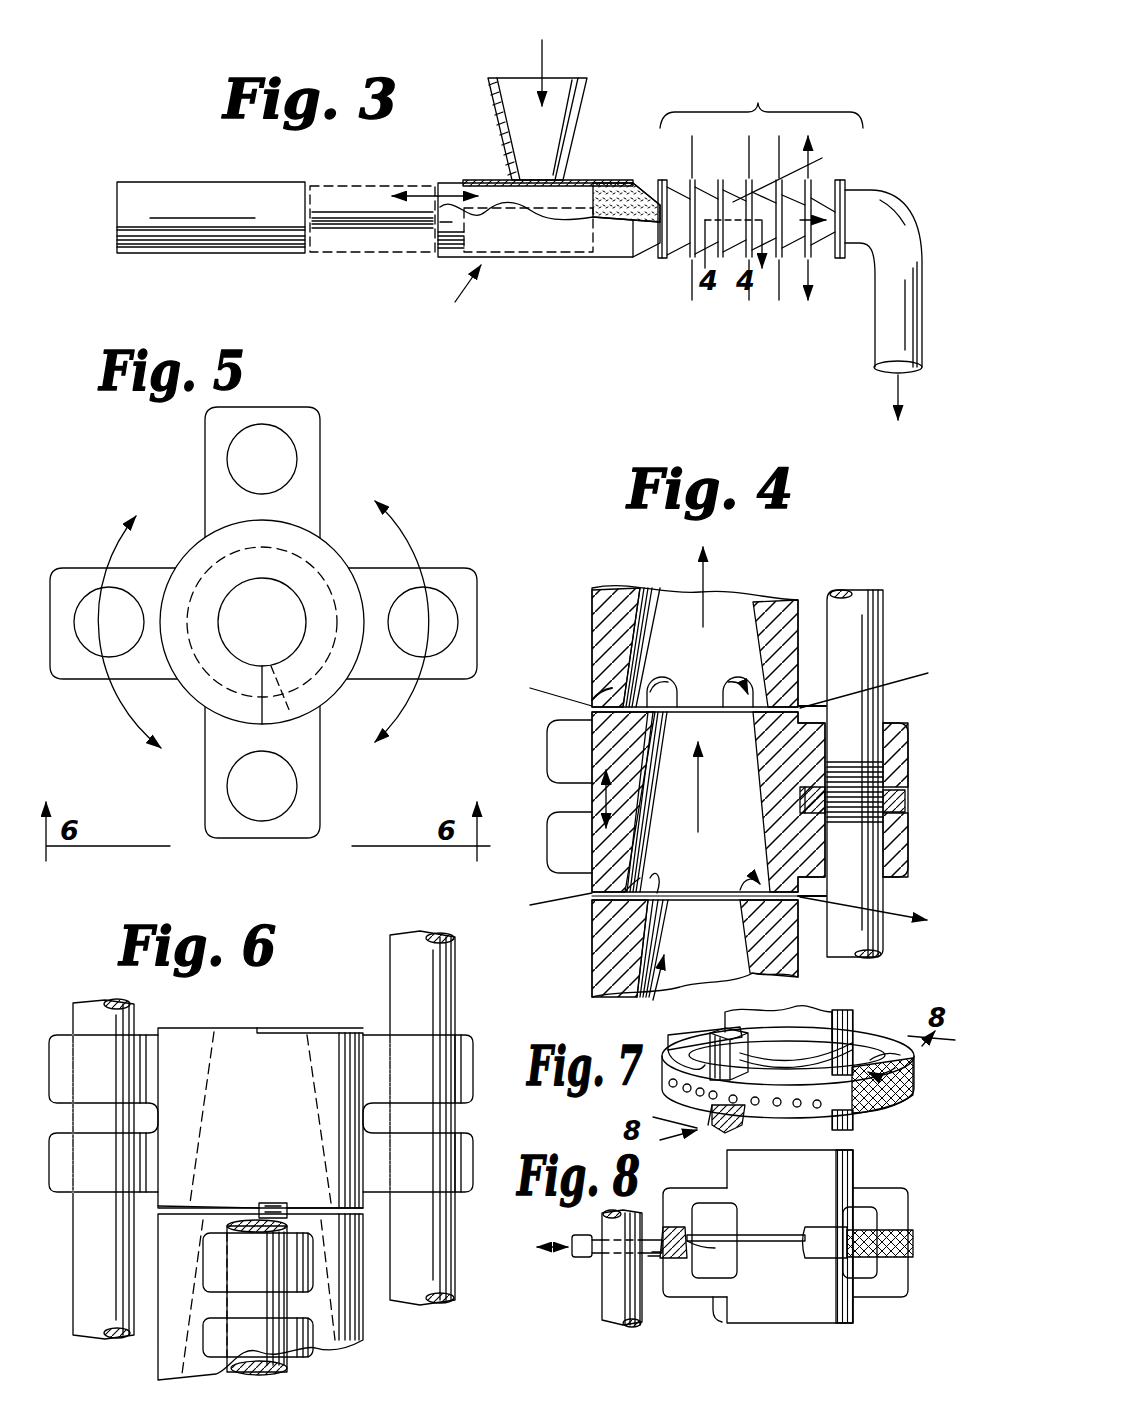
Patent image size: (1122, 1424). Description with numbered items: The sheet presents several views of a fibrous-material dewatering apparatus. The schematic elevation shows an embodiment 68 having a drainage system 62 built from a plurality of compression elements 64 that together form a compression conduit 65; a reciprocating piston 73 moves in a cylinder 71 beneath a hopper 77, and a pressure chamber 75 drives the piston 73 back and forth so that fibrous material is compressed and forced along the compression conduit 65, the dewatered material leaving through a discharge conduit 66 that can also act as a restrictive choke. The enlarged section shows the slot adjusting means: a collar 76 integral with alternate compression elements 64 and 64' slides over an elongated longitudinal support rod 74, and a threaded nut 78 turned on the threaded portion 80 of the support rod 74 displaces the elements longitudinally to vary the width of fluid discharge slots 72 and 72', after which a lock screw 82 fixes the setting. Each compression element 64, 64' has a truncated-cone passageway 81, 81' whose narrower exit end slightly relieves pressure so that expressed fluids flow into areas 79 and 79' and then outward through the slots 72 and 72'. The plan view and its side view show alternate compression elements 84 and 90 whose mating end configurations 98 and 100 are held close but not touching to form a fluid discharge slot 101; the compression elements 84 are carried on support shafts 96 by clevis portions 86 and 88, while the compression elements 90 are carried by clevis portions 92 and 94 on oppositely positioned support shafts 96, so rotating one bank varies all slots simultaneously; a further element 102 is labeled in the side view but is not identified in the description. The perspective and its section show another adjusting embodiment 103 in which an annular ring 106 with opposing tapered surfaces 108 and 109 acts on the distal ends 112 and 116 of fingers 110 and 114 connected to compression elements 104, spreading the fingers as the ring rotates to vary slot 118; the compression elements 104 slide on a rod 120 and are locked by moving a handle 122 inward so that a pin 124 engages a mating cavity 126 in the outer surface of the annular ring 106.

In FIG. 3, the drainage system 62 is at (761, 98).
In FIG. 3, the compression element 64 is at (645, 252).
In FIG. 4, the compression element 64 is at (726, 796).
In FIG. 3, the compression element 64' is at (751, 213).
In FIG. 4, the compression element 64' is at (664, 773).
In FIG. 3, the compression conduit 65 is at (836, 198).
In FIG. 4, the compression conduit 65 is at (715, 977).
In FIG. 3, the discharge conduit 66 is at (874, 200).
In FIG. 3, the embodiment 68 is at (453, 300).
In FIG. 3, the cylinder 71 is at (518, 260).
In FIG. 4, the fluid discharge slot 72 is at (815, 688).
In FIG. 4, the fluid discharge slot 72' is at (824, 944).
In FIG. 3, the reciprocating piston 73 is at (447, 257).
In FIG. 4, the support rod 74 is at (885, 893).
In FIG. 3, the pressure chamber 75 is at (248, 256).
In FIG. 4, the collar 76 is at (908, 737).
In FIG. 3, the hopper 77 is at (583, 95).
In FIG. 4, the threaded nut 78 is at (905, 795).
In FIG. 4, the area 79 is at (592, 911).
In FIG. 4, the area 79' is at (583, 677).
In FIG. 4, the threaded portion 80 is at (857, 765).
In FIG. 4, the passageway 81 is at (730, 802).
In FIG. 4, the passageway 81' is at (762, 577).
In FIG. 4, the lock screw 82 is at (895, 805).
In FIG. 5, the compression element 84 is at (306, 520).
In FIG. 6, the compression element 84 is at (199, 1028).
In FIG. 5, the clevis portion 86 is at (433, 566).
In FIG. 6, the clevis portion 86 is at (463, 1035).
In FIG. 5, the clevis portion 88 is at (82, 564).
In FIG. 6, the clevis portion 88 is at (65, 1035).
In FIG. 5, the compression element 90 is at (262, 622).
In FIG. 6, the compression element 90 is at (365, 1318).
In FIG. 5, the clevis portion 92 is at (325, 790).
In FIG. 6, the clevis portion 92 is at (313, 1340).
In FIG. 5, the clevis portion 94 is at (320, 436).
In FIG. 5, the support shaft 96 is at (452, 608).
In FIG. 6, the support shaft 96 is at (455, 965).
In FIG. 5, the mating end configuration 98 is at (320, 696).
In FIG. 6, the mating end configuration 98 is at (290, 1028).
In FIG. 6, the mating end configuration 100 is at (268, 1203).
In FIG. 6, the fluid discharge slot 101 is at (158, 1206).
In FIG. 6, the joint line 102 is at (309, 1197).
In FIG. 7, the slot adjusting means embodiment 103 is at (920, 1090).
In FIG. 8, the slot adjusting means embodiment 103 is at (913, 1200).
In FIG. 7, the compression element 104 is at (853, 1125).
In FIG. 8, the compression element 104 is at (858, 1313).
In FIG. 7, the annular ring 106 is at (672, 1035).
In FIG. 8, the annular ring 106 is at (913, 1245).
In FIG. 7, the tapered surface 108 is at (670, 1057).
In FIG. 8, the tapered surface 108 is at (910, 1212).
In FIG. 7, the tapered surface 109 is at (883, 1108).
In FIG. 8, the tapered surface 109 is at (892, 1260).
In FIG. 7, the finger 110 is at (735, 1040).
In FIG. 8, the finger 110 is at (663, 1197).
In FIG. 7, the distal end 112 is at (752, 1060).
In FIG. 8, the distal end 112 is at (692, 1250).
In FIG. 7, the finger 114 is at (743, 1125).
In FIG. 8, the finger 114 is at (713, 1300).
In FIG. 7, the distal end 116 is at (712, 1105).
In FIG. 8, the distal end 116 is at (690, 1247).
In FIG. 7, the fluid discharge slot 118 is at (853, 1043).
In FIG. 8, the fluid discharge slot 118 is at (767, 1245).
In FIG. 8, the rod 120 is at (600, 1292).
In FIG. 8, the handle 122 is at (571, 1256).
In FIG. 8, the pin 124 is at (648, 1258).
In FIG. 7, the mating cavity 126 is at (680, 1092).
In FIG. 8, the mating cavity 126 is at (652, 1255).